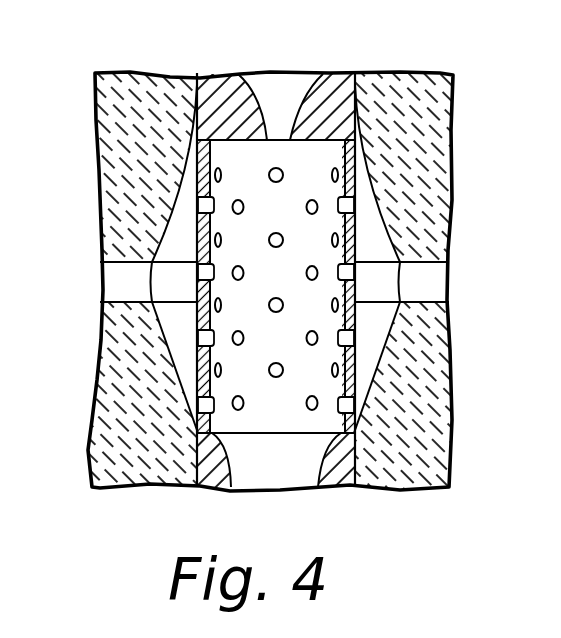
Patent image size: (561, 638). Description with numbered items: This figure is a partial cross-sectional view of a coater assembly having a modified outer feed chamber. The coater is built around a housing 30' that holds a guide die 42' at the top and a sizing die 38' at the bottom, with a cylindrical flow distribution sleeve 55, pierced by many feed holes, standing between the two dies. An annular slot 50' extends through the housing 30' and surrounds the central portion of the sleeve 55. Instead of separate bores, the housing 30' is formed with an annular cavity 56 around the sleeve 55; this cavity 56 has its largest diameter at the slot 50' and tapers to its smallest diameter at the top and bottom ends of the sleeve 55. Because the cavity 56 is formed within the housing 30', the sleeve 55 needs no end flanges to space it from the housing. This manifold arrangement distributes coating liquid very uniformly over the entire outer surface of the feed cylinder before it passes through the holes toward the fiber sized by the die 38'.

The housing 30' is at (249, 280).
The guide die 42' is at (282, 80).
The sizing die 38' is at (276, 488).
The annular slot 50' is at (272, 282).
The sleeve 55 is at (350, 305).
The annular cavity 56 is at (368, 357).